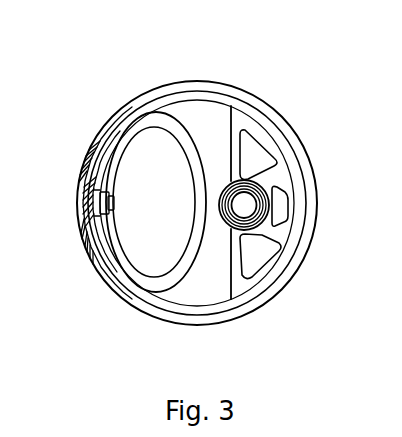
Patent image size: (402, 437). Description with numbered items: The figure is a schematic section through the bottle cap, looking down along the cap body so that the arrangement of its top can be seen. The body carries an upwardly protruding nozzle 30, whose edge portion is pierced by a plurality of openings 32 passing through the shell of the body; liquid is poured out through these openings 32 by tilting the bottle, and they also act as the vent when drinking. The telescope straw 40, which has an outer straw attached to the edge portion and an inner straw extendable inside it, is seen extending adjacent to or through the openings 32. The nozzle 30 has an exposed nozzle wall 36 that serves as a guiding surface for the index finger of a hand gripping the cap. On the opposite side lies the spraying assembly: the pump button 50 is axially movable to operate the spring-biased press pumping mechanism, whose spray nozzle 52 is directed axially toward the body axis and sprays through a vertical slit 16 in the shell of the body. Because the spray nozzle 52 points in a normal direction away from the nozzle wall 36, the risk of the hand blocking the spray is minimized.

The vertical slit 16 is at (83, 200).
The nozzle 30 is at (297, 131).
The openings 32 is at (265, 160).
The nozzle wall 36 is at (232, 271).
The telescope straw 40 is at (231, 184).
The pump button 50 is at (150, 236).
The spray nozzle 52 is at (95, 208).